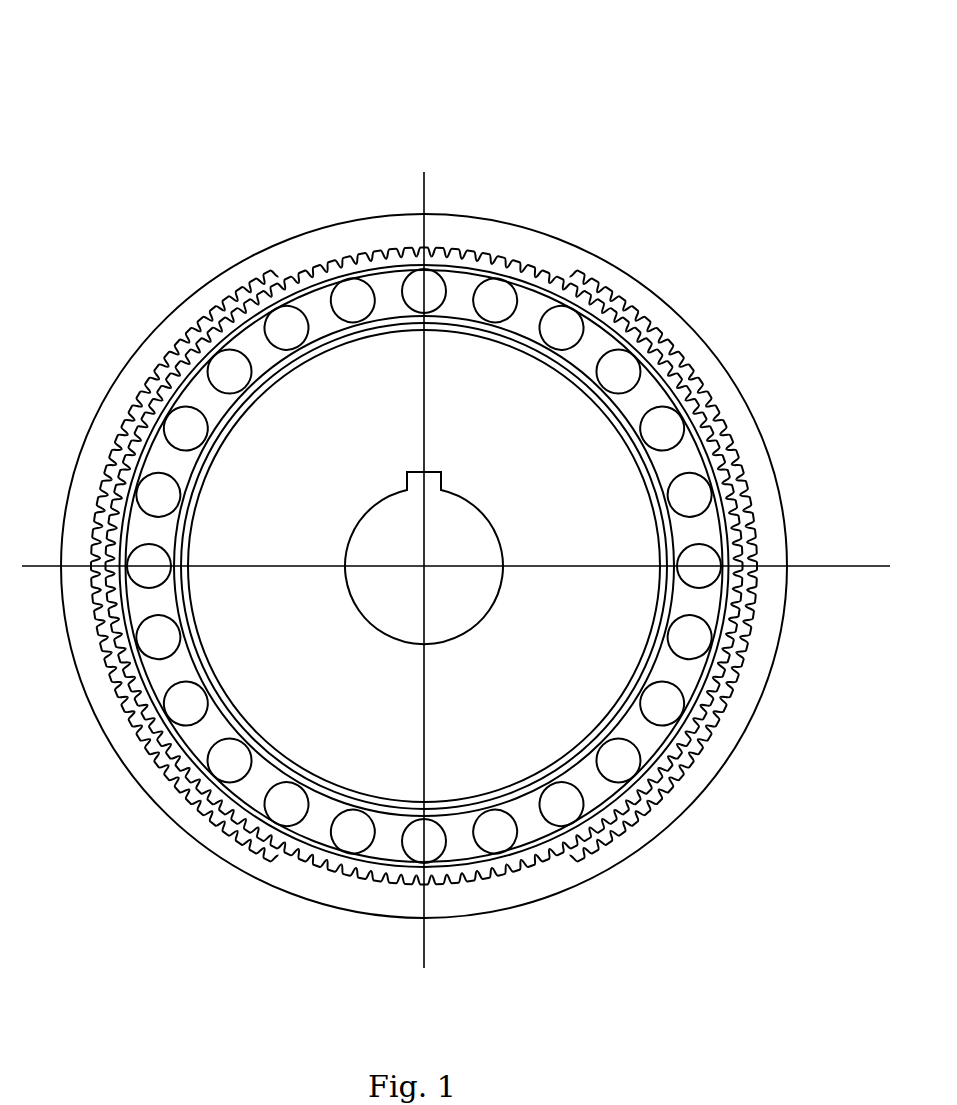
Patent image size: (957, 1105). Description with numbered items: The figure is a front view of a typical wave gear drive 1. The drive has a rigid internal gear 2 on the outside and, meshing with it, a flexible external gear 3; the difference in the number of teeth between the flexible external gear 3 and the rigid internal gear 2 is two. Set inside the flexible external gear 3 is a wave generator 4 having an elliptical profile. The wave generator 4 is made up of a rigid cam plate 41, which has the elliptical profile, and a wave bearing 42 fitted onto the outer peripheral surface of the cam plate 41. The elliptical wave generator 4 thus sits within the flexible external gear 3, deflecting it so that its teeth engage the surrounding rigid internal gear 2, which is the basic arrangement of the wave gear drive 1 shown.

The wave gear drive 1 is at (640, 155).
The rigid internal gear 2 is at (627, 290).
The flexible external gear 3 is at (650, 338).
The wave generator 4 is at (578, 527).
The rigid cam plate 41 is at (548, 632).
The wave bearing 42 is at (703, 606).